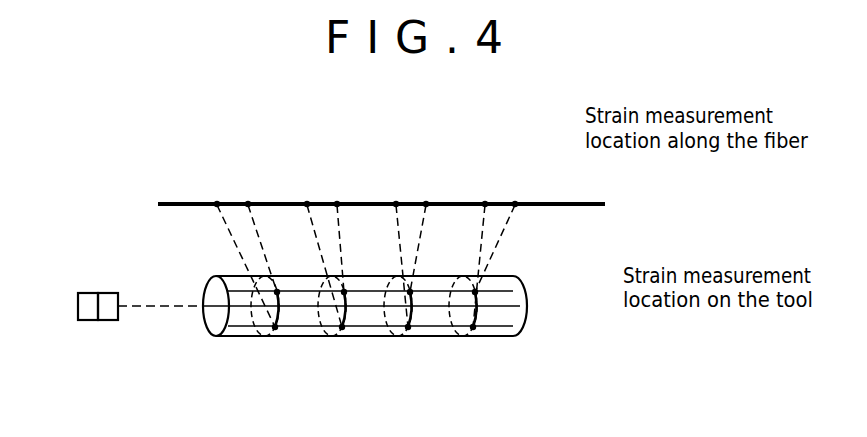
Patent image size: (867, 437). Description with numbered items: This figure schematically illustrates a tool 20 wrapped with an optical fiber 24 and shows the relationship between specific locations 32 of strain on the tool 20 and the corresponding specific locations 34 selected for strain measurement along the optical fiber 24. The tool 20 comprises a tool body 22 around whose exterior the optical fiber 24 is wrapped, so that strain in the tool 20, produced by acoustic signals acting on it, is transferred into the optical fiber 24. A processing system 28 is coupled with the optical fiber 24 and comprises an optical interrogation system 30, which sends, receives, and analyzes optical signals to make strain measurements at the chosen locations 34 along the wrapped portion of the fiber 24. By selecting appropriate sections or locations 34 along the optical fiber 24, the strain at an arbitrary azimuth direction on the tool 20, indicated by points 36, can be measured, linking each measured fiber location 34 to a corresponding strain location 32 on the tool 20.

The tool 20 is at (528, 297).
The tool body 22 is at (513, 317).
The optical fiber 24 is at (573, 203).
The processing system 28 is at (88, 293).
The optical interrogation system 30 is at (108, 312).
The specific locations of strain on the tool 32 is at (289, 319).
The specific locations selected for strain measurement along the optical fiber 34 is at (278, 294).
The points 36 is at (248, 203).